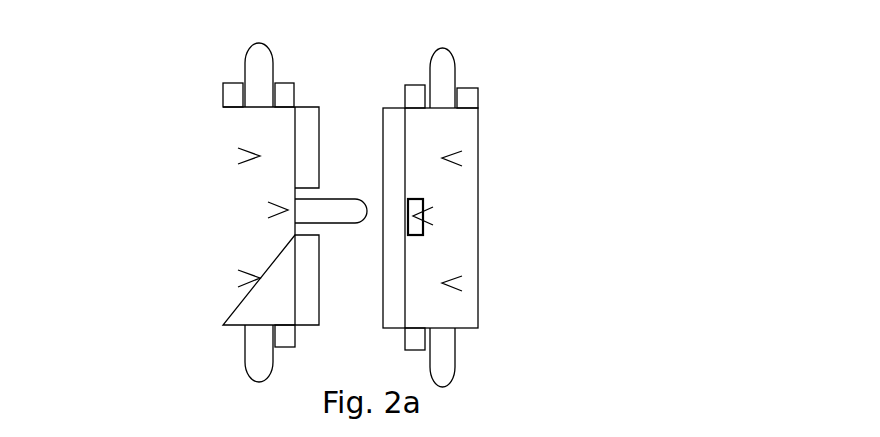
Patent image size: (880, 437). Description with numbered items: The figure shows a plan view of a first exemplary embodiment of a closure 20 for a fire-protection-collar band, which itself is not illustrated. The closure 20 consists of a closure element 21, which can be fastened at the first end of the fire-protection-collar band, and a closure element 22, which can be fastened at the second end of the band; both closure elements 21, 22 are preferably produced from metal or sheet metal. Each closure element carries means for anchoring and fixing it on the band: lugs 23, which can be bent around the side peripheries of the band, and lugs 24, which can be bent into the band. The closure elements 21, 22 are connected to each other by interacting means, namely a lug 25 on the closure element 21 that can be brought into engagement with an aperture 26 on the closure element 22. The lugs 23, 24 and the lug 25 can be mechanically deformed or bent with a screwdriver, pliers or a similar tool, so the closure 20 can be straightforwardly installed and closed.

The closure 20 is at (660, 140).
The closure element 21 is at (196, 168).
The closure element 22 is at (505, 309).
The lugs 23 is at (260, 68).
The lugs 24 is at (268, 211).
The lug 25 is at (333, 212).
The aperture 26 is at (413, 230).